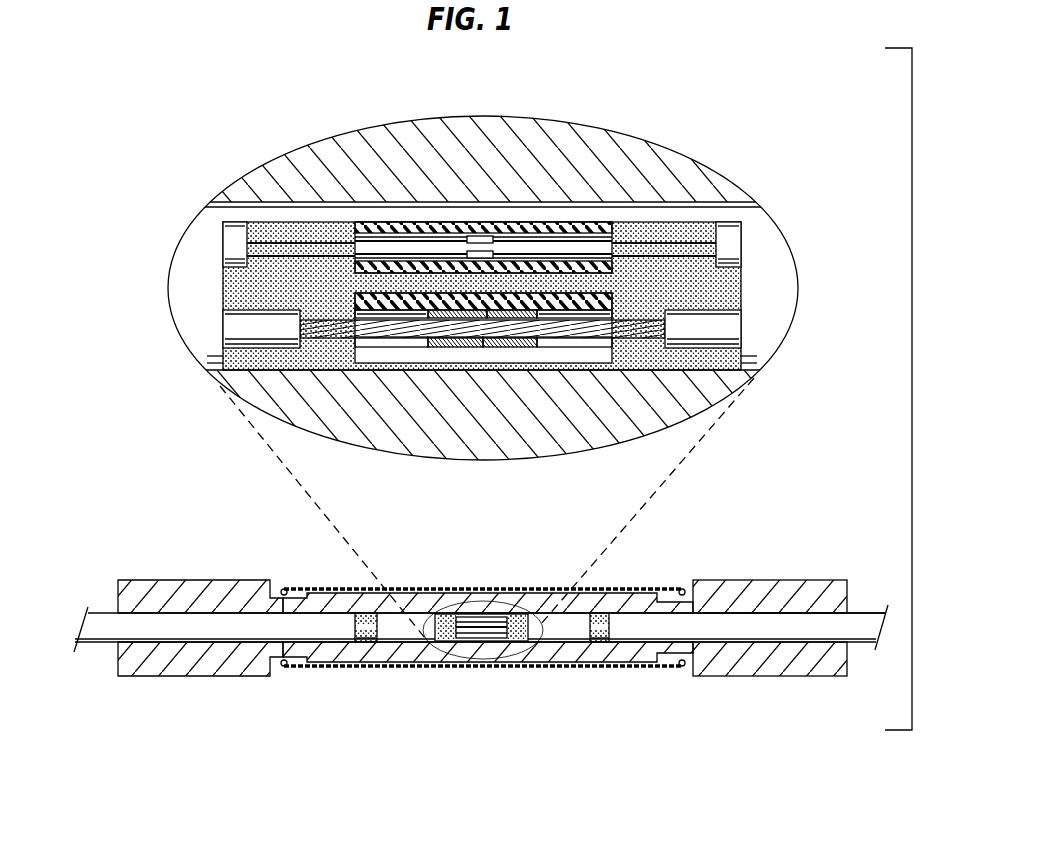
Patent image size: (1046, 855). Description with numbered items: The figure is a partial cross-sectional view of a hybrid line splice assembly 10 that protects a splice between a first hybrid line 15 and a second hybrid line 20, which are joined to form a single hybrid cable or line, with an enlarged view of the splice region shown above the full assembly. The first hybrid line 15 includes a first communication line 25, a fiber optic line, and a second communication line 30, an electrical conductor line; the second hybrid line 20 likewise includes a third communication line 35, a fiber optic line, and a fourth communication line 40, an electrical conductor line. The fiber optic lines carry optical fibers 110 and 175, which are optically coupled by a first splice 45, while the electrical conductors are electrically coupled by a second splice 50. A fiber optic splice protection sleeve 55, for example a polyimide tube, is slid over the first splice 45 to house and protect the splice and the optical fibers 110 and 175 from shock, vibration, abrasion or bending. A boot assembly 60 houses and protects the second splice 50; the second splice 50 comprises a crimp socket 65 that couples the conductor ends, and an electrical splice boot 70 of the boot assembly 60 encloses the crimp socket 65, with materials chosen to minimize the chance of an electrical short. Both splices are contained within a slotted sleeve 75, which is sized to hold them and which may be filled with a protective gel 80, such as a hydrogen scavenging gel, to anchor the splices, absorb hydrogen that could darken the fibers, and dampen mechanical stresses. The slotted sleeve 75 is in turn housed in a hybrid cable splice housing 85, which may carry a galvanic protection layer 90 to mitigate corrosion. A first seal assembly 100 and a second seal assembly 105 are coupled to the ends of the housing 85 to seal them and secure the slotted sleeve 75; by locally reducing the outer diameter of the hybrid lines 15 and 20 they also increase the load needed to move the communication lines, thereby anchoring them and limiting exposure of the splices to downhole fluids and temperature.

The hybrid line splice assembly 10 is at (217, 549).
The first hybrid line 15 is at (103, 621).
The second hybrid line 20 is at (863, 619).
The first communication line 25 is at (238, 240).
The second communication line 30 is at (253, 330).
The third communication line 35 is at (722, 238).
The fourth communication line 40 is at (714, 326).
The first splice 45 is at (489, 253).
The second splice 50 is at (513, 354).
The fiber optic splice protection sleeve 55 is at (432, 225).
The boot assembly 60 is at (396, 378).
The crimp socket 65 is at (447, 347).
The electrical splice boot 70 is at (572, 356).
The slotted sleeve 75 is at (403, 634).
The protective gel 80 is at (457, 622).
The hybrid cable splice housing 85 is at (660, 578).
The galvanic protection layer 90 is at (494, 588).
The first seal assembly 100 is at (158, 580).
The second seal assembly 105 is at (775, 580).
The optical fibers 110 is at (317, 242).
The optical fibers 175 is at (643, 240).